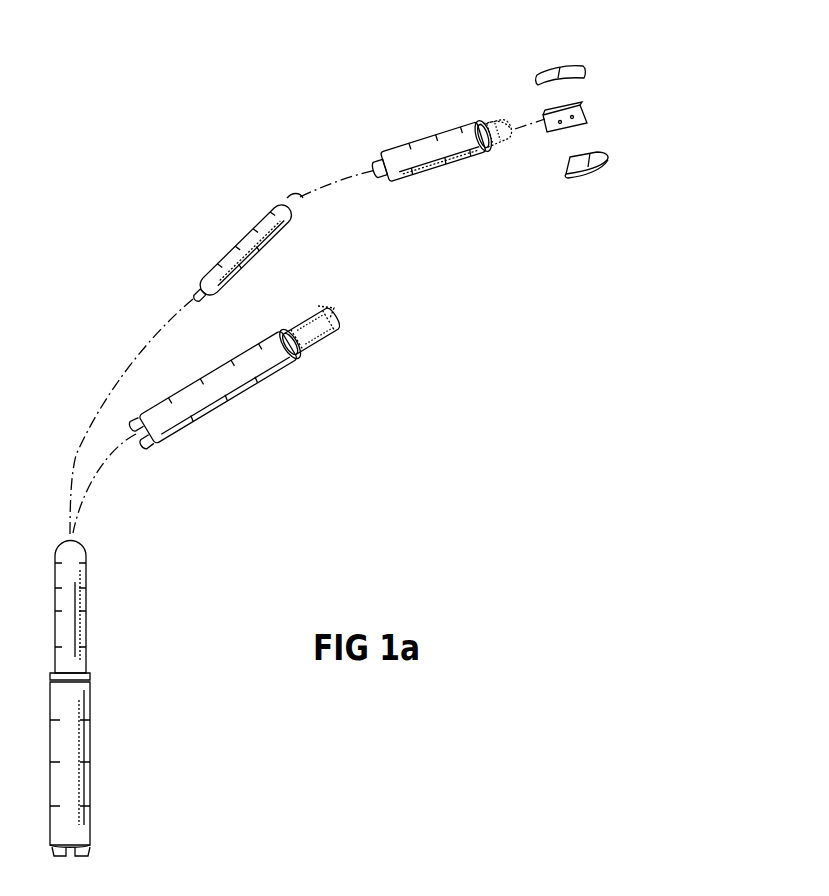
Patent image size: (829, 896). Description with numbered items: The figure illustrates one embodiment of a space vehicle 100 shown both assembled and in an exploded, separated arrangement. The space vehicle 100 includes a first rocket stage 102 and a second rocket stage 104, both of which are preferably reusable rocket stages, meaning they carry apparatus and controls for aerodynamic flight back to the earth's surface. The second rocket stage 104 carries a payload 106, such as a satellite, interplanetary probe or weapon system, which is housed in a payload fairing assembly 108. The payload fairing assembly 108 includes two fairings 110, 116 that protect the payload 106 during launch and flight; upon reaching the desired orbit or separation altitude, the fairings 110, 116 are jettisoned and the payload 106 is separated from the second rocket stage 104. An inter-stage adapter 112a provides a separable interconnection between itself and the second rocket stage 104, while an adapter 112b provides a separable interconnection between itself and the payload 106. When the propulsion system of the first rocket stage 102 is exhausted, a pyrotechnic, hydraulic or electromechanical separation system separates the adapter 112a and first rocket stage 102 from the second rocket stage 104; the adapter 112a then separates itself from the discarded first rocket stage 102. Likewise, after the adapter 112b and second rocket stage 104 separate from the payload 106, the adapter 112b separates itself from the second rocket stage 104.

The space vehicle 100 is at (234, 579).
The first rocket stage 102 is at (240, 392).
The second rocket stage 104 is at (228, 243).
The payload 106 is at (590, 108).
The payload fairing assembly 108 is at (294, 197).
The fairing 110 is at (600, 167).
The inter-stage adapter 112a is at (327, 337).
The adapter 112b is at (492, 128).
The fairing 116 is at (584, 66).